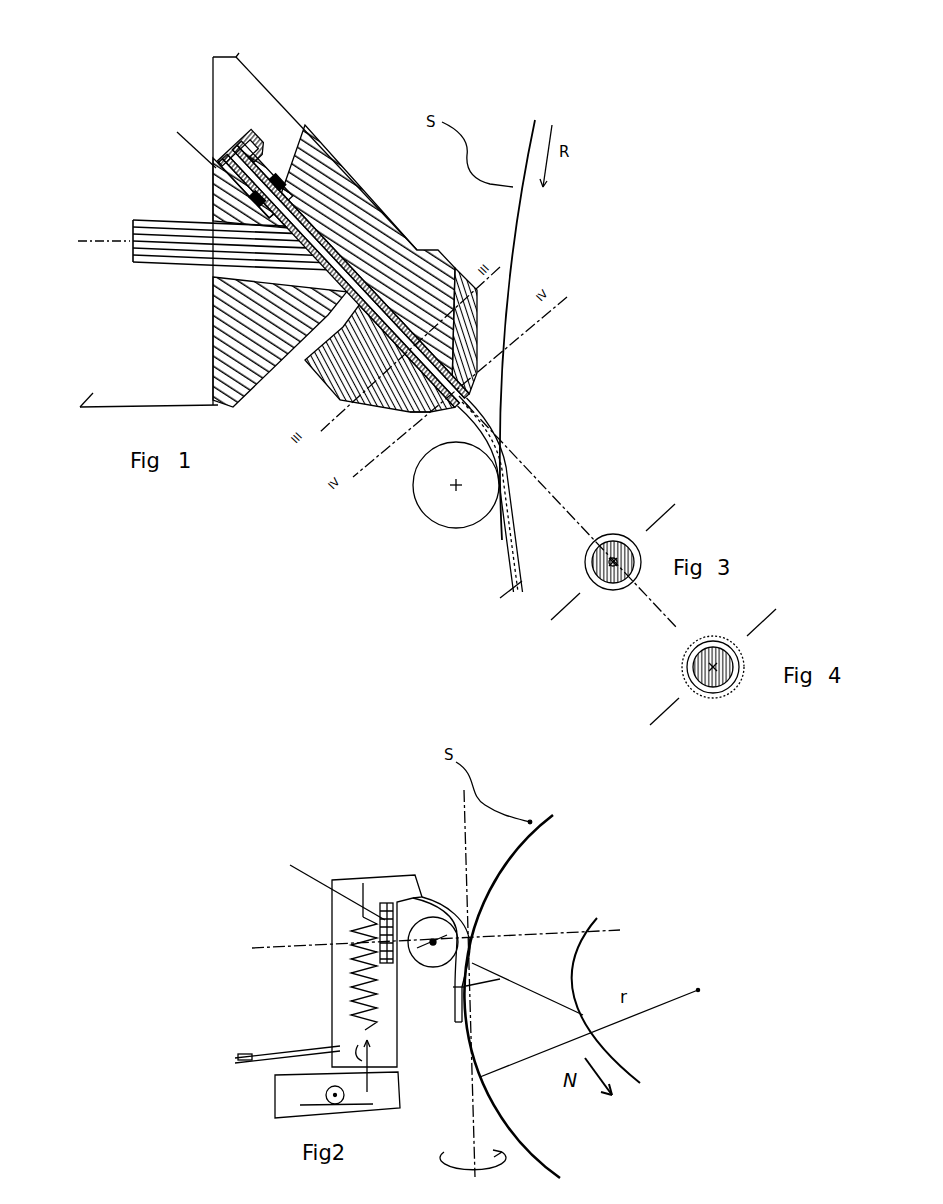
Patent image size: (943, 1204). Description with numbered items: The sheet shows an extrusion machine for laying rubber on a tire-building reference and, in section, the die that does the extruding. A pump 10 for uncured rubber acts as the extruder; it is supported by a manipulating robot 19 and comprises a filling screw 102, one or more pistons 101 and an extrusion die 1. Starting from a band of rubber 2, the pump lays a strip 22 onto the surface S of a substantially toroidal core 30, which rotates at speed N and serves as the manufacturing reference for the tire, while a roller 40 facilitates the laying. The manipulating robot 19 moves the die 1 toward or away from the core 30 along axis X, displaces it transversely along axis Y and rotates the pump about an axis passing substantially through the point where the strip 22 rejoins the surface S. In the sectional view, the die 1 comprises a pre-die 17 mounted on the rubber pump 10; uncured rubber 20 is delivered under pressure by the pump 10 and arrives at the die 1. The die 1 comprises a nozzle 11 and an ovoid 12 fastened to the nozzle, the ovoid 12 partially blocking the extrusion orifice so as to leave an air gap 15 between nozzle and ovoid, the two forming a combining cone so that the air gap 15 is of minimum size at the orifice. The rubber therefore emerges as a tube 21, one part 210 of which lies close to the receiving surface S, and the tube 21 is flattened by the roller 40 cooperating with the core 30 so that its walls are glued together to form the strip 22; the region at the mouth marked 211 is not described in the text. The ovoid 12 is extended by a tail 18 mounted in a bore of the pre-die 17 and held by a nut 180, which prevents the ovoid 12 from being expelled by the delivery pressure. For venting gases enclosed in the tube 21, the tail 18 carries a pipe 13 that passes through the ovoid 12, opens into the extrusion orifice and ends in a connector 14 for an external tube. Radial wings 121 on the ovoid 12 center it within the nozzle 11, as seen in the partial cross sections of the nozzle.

In FIG. 1, the pump for uncured rubber 10 is at (193, 82).
In FIG. 2, the pump for uncured rubber 10 is at (355, 952).
In FIG. 1, the connector 14 is at (257, 135).
In FIG. 1, the nut 180 is at (283, 170).
In FIG. 1, the pre-die 17 is at (362, 230).
In FIG. 1, the pipe 13 is at (358, 231).
In FIG. 1, the tail 18 is at (213, 203).
In FIG. 1, the uncured rubber 20 is at (140, 237).
In FIG. 1, the core 30 is at (526, 228).
In FIG. 2, the core 30 is at (527, 878).
In FIG. 1, the nozzle 11 is at (478, 348).
In FIG. 4, the nozzle 11 is at (747, 667).
In FIG. 1, the ovoid 12 is at (474, 377).
In FIG. 3, the ovoid 12 is at (617, 538).
In FIG. 4, the ovoid 12 is at (712, 697).
In FIG. 1, the part of the tube 210 is at (502, 415).
In FIG. 1, the tube 21 is at (503, 435).
In FIG. 1, the nozzle mouth 211 is at (435, 420).
In FIG. 1, the roller 40 is at (436, 502).
In FIG. 2, the roller 40 is at (425, 962).
In FIG. 1, the strip 22 is at (503, 560).
In FIG. 2, the strip 22 is at (524, 989).
In FIG. 3, the radial wings 121 is at (598, 584).
In FIG. 4, the air gap 15 is at (727, 637).
In FIG. 2, the extrusion die 1 is at (422, 876).
In FIG. 2, the piston 101 is at (380, 907).
In FIG. 2, the filling screw 102 is at (353, 1002).
In FIG. 2, the band of rubber 2 is at (235, 1058).
In FIG. 2, the manipulating robot 19 is at (293, 1092).